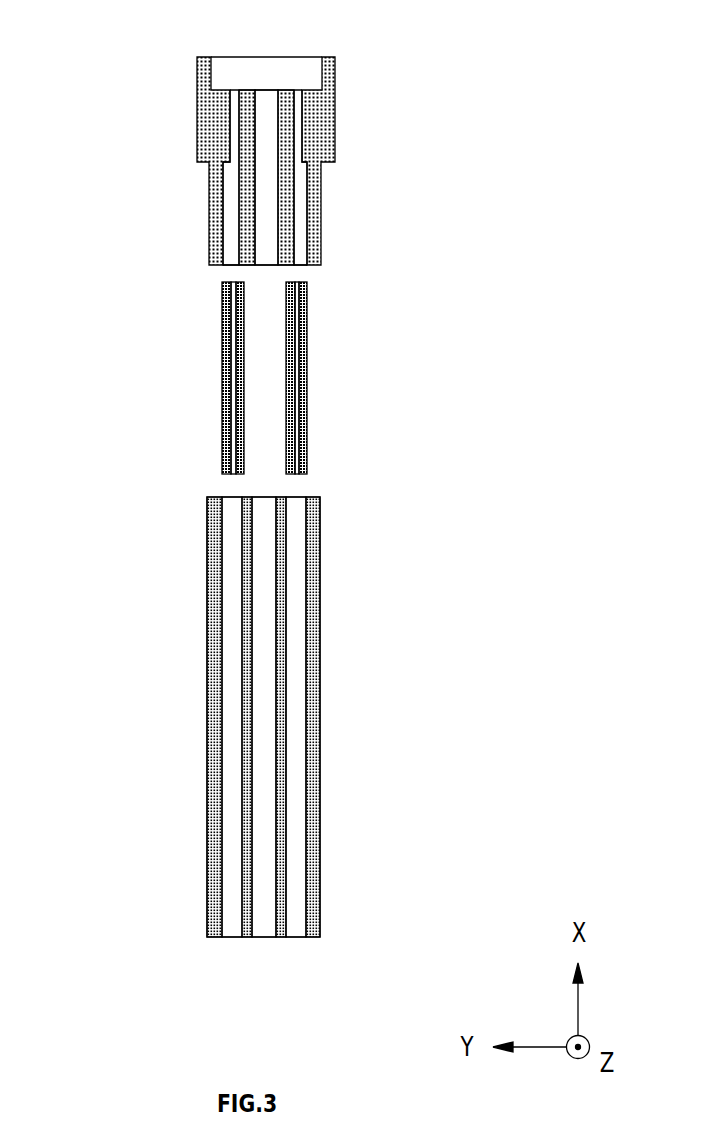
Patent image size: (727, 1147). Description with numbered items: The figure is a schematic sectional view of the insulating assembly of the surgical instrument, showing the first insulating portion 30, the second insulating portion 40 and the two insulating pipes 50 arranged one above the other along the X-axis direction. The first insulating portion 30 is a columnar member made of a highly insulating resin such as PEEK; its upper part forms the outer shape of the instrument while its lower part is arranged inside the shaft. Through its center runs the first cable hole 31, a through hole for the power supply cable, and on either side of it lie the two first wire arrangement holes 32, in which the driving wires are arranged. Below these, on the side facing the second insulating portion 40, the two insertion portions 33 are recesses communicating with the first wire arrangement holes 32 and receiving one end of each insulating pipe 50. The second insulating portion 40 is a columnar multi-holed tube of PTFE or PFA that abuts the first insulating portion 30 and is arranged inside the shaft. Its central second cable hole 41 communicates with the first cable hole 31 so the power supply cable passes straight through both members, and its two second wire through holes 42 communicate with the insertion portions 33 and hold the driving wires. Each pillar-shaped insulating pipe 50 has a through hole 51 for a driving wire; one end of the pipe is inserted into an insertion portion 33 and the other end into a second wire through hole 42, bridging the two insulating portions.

The first insulating portion 30 is at (125, 142).
The first cable hole 31 is at (252, 111).
The first wire arrangement holes 32 is at (238, 104).
The insertion portions 33 is at (228, 219).
The second insulating portion 40 is at (124, 634).
The second cable hole 41 is at (274, 917).
The second wire through holes 42 is at (222, 782).
The insulating pipes 50 is at (138, 351).
The through hole 51 is at (238, 417).